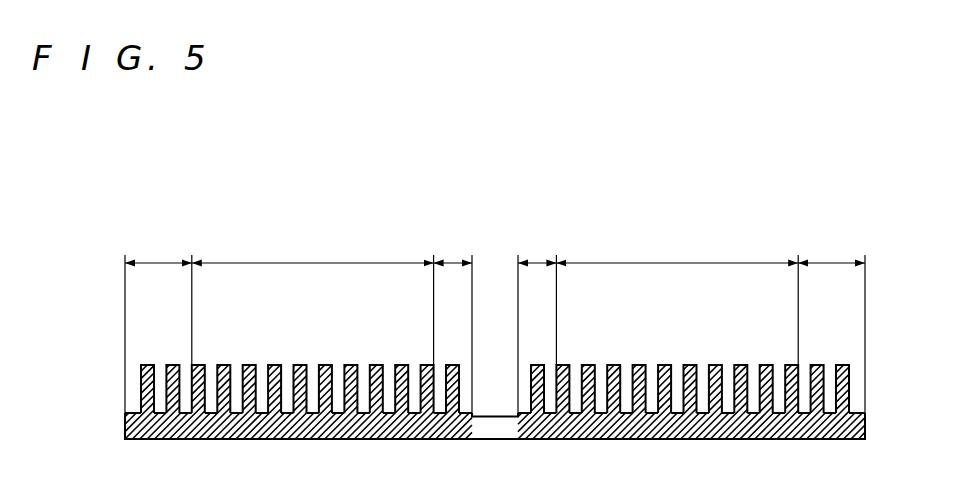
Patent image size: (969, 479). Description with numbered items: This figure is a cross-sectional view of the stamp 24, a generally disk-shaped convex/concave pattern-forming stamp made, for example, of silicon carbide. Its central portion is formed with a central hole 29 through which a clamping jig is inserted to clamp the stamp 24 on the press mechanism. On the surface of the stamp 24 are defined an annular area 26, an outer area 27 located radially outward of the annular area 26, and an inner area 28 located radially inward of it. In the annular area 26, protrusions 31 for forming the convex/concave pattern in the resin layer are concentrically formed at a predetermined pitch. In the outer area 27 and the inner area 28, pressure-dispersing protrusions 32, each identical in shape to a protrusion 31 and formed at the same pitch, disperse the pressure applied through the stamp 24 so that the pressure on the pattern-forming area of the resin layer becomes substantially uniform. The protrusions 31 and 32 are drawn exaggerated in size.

The stamp 24 is at (515, 197).
The annular area 26 is at (495, 299).
The outer area 27 is at (495, 323).
The inner area 28 is at (495, 325).
The central hole 29 is at (493, 418).
The protrusions 31 is at (425, 365).
The protrusions 32 is at (173, 365).